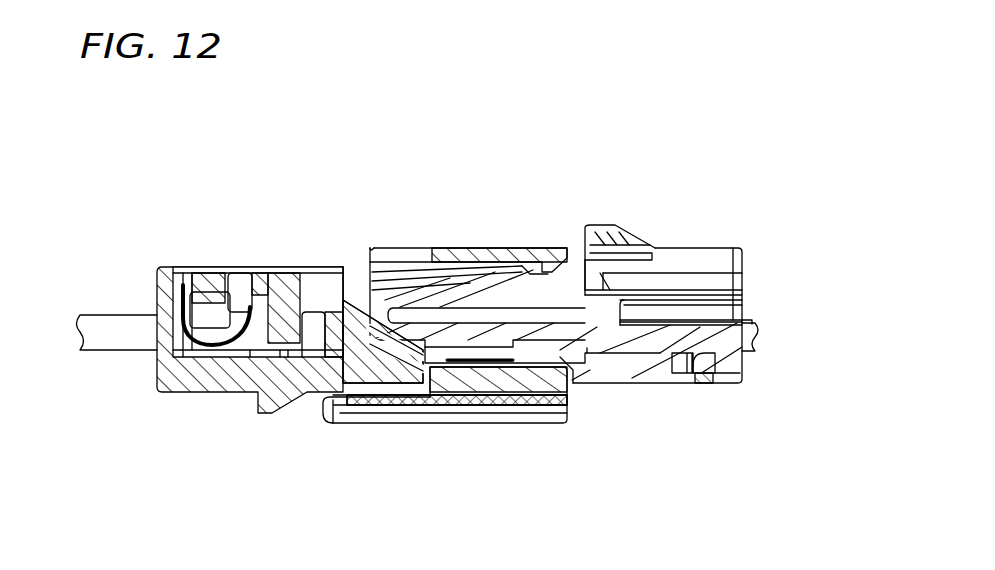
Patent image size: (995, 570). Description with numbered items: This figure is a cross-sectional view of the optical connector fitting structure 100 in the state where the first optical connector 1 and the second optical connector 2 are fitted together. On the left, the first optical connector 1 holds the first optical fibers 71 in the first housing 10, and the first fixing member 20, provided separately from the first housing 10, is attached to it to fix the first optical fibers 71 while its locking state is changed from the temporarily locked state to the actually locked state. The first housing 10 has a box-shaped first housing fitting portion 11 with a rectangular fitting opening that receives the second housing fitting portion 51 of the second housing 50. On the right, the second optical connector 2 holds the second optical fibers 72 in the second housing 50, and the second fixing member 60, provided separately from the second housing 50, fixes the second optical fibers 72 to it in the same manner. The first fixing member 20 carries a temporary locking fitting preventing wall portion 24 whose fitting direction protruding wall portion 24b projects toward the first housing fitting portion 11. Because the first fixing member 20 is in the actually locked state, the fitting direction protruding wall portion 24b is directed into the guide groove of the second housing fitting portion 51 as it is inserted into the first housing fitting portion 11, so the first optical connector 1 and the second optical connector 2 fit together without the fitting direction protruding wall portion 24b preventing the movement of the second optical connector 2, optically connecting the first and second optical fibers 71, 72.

The optical connector fitting structure 100 is at (170, 157).
The first optical connector 1 is at (249, 200).
The second optical connector 2 is at (613, 200).
The first housing 10 is at (197, 405).
The first housing fitting portion 11 is at (448, 232).
The first fixing member 20 is at (268, 262).
The temporary locking fitting preventing wall portion 24 is at (365, 373).
The fitting direction protruding wall portion 24b is at (410, 360).
The second housing 50 is at (479, 232).
The second housing fitting portion 51 is at (428, 270).
The second fixing member 60 is at (618, 384).
The first optical fibers 71 is at (118, 306).
The second optical fibers 72 is at (755, 311).